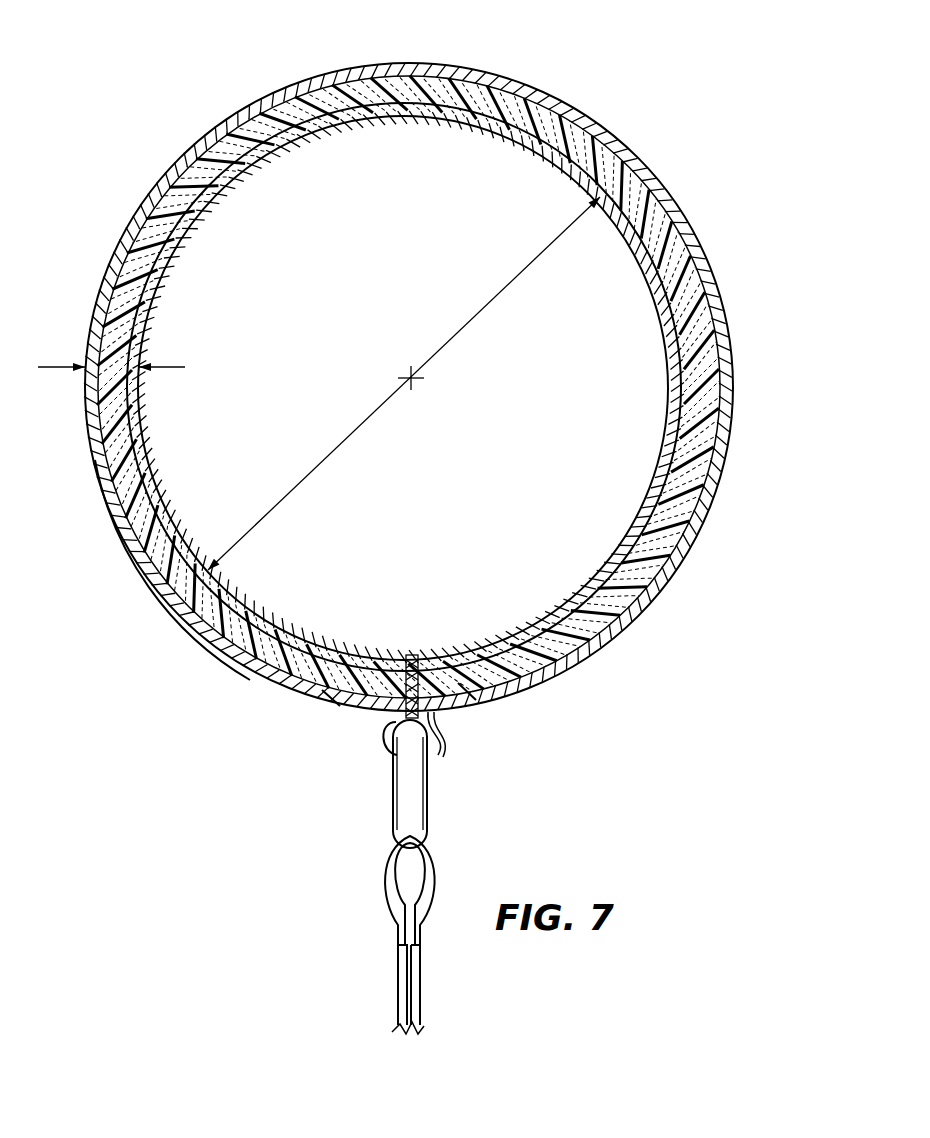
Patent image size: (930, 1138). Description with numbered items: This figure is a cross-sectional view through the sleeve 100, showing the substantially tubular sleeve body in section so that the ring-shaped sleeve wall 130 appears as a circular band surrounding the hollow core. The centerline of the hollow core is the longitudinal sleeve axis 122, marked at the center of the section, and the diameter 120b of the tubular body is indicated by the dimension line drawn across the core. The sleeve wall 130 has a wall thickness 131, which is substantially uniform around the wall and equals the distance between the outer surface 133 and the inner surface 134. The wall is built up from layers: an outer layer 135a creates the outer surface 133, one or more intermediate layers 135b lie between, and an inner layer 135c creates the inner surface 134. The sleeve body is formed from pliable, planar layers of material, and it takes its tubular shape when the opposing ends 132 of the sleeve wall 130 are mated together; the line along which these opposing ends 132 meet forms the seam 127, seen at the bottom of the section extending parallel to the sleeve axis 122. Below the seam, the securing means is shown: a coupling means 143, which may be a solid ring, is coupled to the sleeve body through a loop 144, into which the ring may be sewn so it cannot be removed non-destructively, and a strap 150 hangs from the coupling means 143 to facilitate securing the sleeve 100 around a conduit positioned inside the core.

The sleeve 100 is at (140, 128).
The sleeve wall 130 is at (566, 140).
The inner surface 134 is at (362, 122).
The outer layer 135a is at (727, 473).
The intermediate layers 135b is at (704, 370).
The inner layer 135c is at (636, 262).
The wall thickness 131 is at (63, 363).
The sleeve axis 122 is at (402, 372).
The diameter 120b is at (297, 490).
The outer surface 133 is at (147, 578).
The seam 127 is at (410, 660).
The opposing ends 132 is at (330, 703).
The coupling means 143 is at (410, 790).
The loop 144 is at (380, 737).
The strap 150 is at (407, 923).